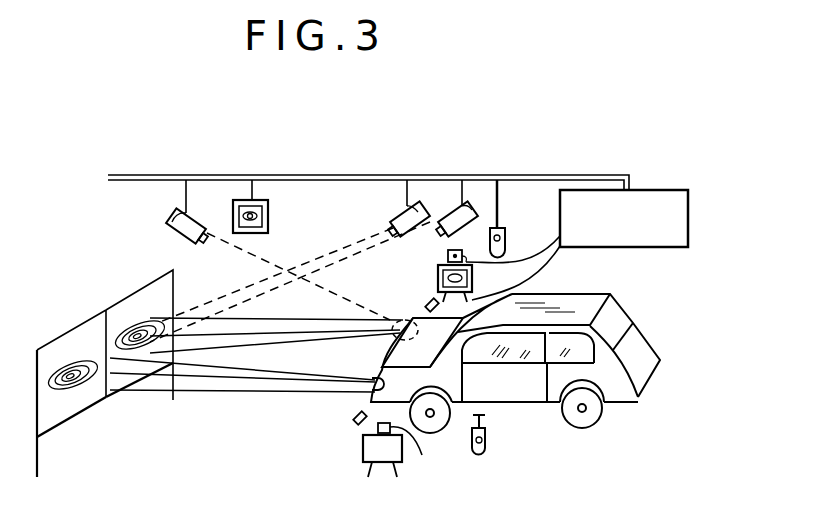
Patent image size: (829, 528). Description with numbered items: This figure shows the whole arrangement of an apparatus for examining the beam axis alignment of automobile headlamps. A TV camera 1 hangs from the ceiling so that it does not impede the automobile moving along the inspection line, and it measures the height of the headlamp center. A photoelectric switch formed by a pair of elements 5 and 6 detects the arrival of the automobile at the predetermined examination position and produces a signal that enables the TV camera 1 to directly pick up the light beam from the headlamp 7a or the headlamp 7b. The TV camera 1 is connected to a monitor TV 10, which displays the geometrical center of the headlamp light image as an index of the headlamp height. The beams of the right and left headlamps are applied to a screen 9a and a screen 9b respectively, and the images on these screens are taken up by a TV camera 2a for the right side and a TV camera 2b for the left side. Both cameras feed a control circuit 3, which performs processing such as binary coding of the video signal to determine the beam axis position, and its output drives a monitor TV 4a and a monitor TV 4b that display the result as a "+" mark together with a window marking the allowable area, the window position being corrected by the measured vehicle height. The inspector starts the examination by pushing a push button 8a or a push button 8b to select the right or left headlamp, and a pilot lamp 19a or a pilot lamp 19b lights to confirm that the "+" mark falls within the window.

The TV camera 1 is at (198, 222).
The TV camera 2a is at (396, 214).
The TV camera 2b is at (452, 208).
The control circuit 3 is at (640, 190).
The monitor TV 4a is at (438, 279).
The monitor TV 4b is at (363, 449).
The photoelectric switch element 5 is at (426, 306).
The photoelectric switch element 6 is at (352, 421).
The headlamp 7a is at (398, 341).
The headlamp 7b is at (371, 398).
The push button 8a is at (505, 233).
The push button 8b is at (485, 445).
The screen 9a is at (135, 296).
The screen 9b is at (68, 331).
The monitor TV 10 is at (268, 213).
The pilot lamp 19a is at (448, 257).
The pilot lamp 19b is at (417, 452).